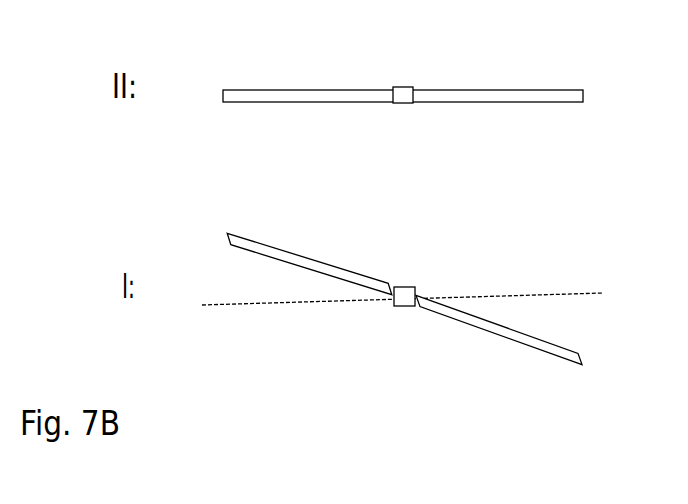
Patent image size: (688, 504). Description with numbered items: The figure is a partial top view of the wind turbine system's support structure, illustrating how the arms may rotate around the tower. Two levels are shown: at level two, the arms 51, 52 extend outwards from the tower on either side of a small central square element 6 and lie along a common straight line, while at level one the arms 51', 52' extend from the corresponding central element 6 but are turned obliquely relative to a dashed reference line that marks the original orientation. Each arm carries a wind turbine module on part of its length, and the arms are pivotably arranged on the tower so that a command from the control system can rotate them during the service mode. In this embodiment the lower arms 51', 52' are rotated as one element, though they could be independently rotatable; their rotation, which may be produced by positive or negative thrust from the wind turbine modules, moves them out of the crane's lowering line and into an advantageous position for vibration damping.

The hinge / joint element 6 is at (393, 88).
The arm at level II 51 is at (313, 69).
The arm at level II 52 is at (493, 69).
The arm at level I 51' is at (309, 243).
The arm at level I 52' is at (499, 354).